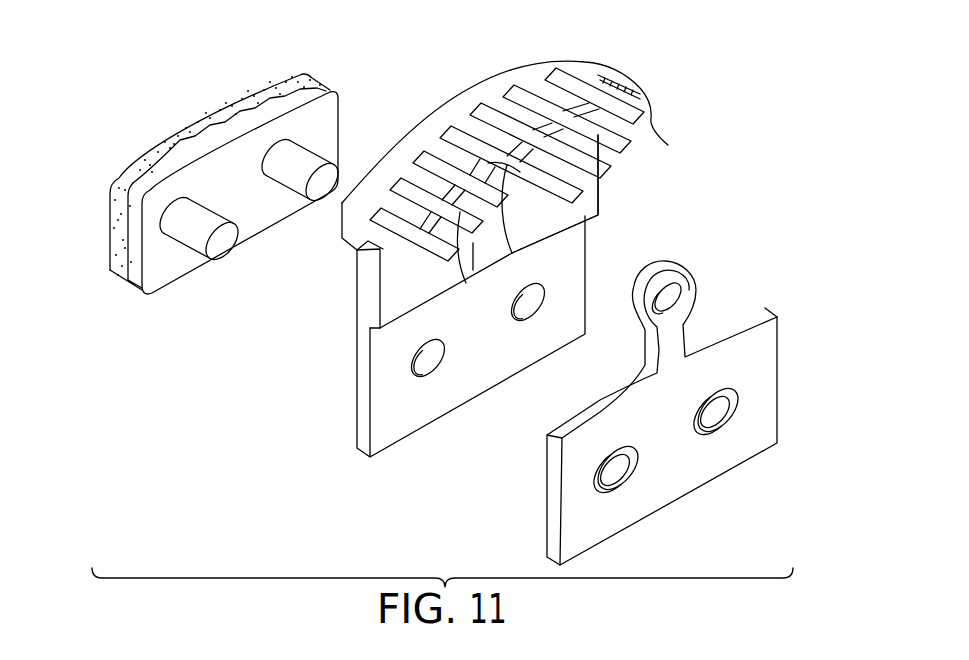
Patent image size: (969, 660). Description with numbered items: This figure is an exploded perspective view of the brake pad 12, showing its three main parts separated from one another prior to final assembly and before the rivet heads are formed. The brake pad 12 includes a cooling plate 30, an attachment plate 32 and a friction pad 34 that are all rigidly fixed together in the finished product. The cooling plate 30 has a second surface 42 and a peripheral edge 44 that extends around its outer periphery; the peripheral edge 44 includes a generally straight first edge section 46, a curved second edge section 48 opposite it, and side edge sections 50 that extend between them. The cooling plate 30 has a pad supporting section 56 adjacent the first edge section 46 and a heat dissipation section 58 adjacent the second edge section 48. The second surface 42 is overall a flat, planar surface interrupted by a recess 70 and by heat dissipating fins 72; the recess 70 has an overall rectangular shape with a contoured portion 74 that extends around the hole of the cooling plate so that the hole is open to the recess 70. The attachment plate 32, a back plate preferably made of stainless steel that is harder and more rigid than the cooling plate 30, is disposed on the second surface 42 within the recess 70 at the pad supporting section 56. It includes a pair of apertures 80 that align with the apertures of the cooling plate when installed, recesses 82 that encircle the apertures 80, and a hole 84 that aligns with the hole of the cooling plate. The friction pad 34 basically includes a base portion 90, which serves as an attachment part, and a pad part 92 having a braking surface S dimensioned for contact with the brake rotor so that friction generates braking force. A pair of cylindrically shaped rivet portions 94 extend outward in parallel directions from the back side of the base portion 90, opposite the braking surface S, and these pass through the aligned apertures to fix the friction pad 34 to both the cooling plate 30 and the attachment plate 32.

The brake pad 12 is at (416, 287).
The cooling plate 30 is at (525, 168).
The attachment plate 32 is at (685, 413).
The friction pad 34 is at (177, 184).
The second surface 42 is at (587, 200).
The peripheral edge 44 is at (543, 70).
The first edge section 46 is at (430, 427).
The second edge section 48 is at (502, 83).
The side edge sections 50 is at (465, 349).
The pad supporting section 56 is at (303, 389).
The heat dissipation section 58 is at (329, 210).
The recess 70 is at (558, 320).
The heat dissipating fins 72 is at (433, 187).
The contoured portion 74 is at (500, 238).
The apertures 80 is at (735, 400).
The recesses 82 is at (725, 427).
The hole 84 is at (670, 300).
The base portion 90 is at (133, 263).
The pad part 92 is at (117, 227).
The rivet portions 94 is at (195, 218).
The braking surface S is at (195, 125).